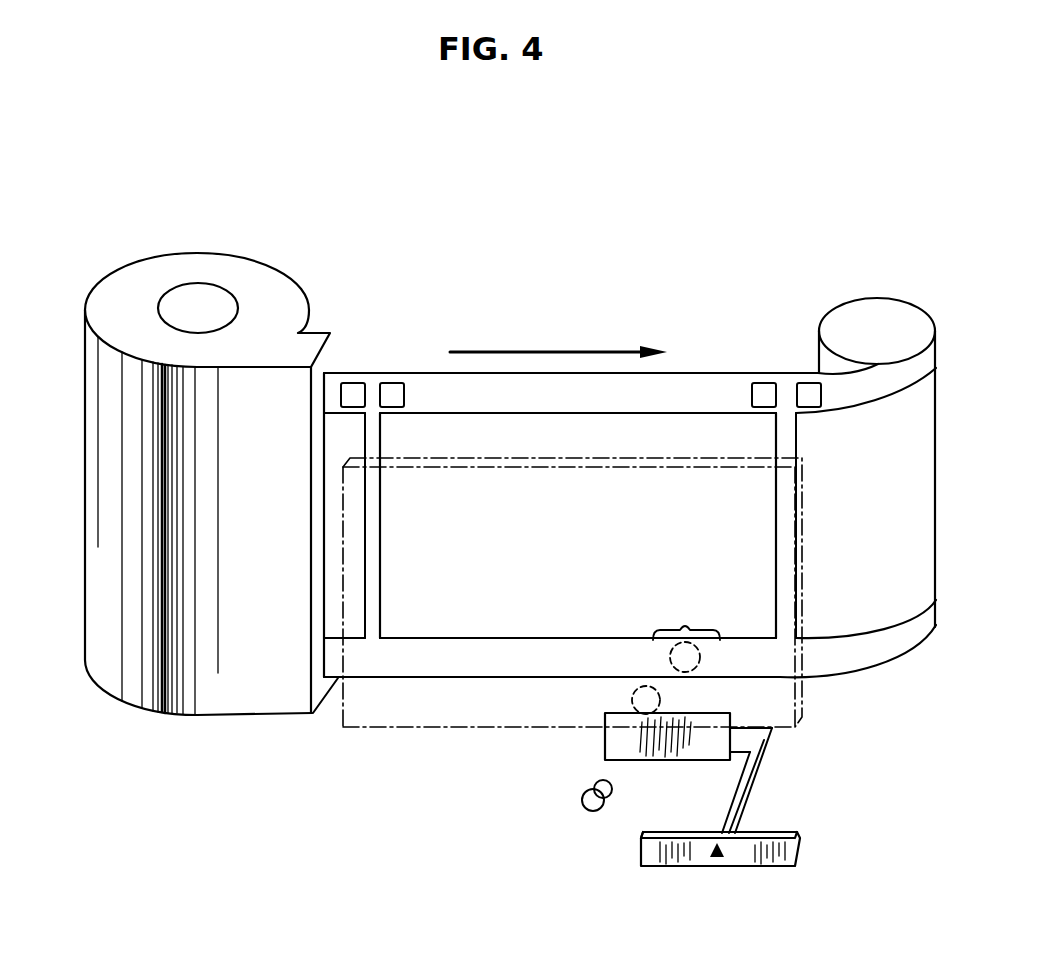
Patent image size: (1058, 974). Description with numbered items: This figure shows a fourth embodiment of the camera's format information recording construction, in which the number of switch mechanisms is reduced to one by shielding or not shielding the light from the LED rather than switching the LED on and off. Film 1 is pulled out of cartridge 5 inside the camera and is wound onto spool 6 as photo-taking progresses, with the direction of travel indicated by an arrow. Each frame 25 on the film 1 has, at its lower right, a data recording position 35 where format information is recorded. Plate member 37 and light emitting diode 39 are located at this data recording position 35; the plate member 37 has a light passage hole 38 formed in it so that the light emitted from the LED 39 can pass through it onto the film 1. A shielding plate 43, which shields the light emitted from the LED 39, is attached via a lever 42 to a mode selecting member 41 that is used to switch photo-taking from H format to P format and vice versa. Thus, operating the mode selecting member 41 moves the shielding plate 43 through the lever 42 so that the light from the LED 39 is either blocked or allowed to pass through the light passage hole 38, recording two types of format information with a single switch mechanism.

The film 1 is at (725, 388).
The cartridge 5 is at (264, 281).
The spool 6 is at (888, 318).
The frame 25 is at (648, 430).
The data recording position 35 is at (686, 626).
The plate member 37 is at (380, 712).
The light passage hole 38 is at (625, 696).
The light emitting diode (LED) 39 is at (613, 797).
The mode selecting member 41 is at (800, 850).
The lever 42 is at (760, 767).
The shielding plate 43 is at (623, 746).